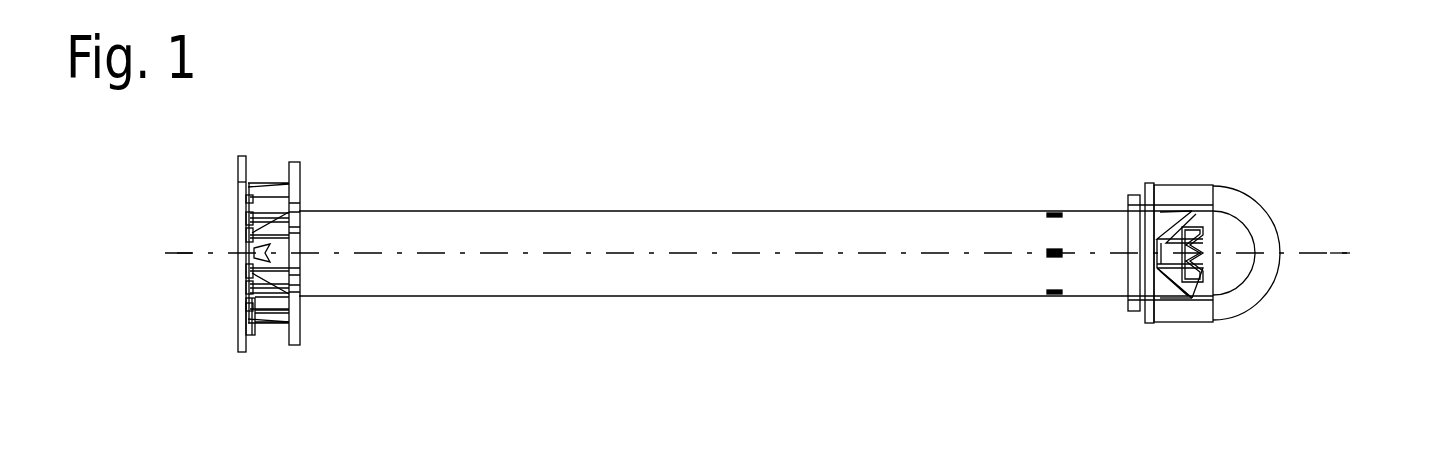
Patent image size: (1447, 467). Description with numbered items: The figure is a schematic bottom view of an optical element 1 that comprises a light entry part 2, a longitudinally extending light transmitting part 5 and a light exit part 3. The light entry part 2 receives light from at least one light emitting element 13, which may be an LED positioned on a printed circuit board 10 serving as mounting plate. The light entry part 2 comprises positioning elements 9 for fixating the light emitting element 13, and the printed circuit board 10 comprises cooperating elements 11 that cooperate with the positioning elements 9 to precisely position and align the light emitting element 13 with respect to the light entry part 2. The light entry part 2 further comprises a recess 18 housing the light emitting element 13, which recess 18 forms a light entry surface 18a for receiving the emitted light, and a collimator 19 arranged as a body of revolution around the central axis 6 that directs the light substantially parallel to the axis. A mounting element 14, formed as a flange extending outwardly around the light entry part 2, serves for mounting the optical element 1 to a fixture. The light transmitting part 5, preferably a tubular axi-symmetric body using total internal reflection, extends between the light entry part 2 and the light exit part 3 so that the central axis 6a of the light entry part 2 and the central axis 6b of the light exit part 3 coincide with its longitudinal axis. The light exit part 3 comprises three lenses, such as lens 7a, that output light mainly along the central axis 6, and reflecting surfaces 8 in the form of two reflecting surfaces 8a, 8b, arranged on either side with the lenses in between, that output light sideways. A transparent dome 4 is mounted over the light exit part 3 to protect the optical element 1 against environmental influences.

The optical element 1 is at (1260, 214).
The light entry part 2 is at (281, 244).
The light exit part 3 is at (1185, 172).
The transparent dome 4 is at (1276, 279).
The light transmitting part 5 is at (722, 211).
The central axis 6 is at (858, 255).
The central axis of the light entry part 6a is at (190, 253).
The central axis of the light exit part 6b is at (1363, 253).
The lens 7a is at (1207, 250).
The spring element 8 is at (1200, 261).
The reflecting surface 8a is at (1183, 213).
The reflecting surface 8b is at (1163, 298).
The positioning elements 9 is at (272, 322).
The printed circuit board 10 is at (242, 160).
The cooperating elements 11 is at (249, 193).
The light emitting element 13 is at (249, 253).
The mounting element 14 is at (298, 170).
The recess 18 is at (252, 262).
The light entry surface 18a is at (300, 253).
The collimator 19 is at (268, 288).